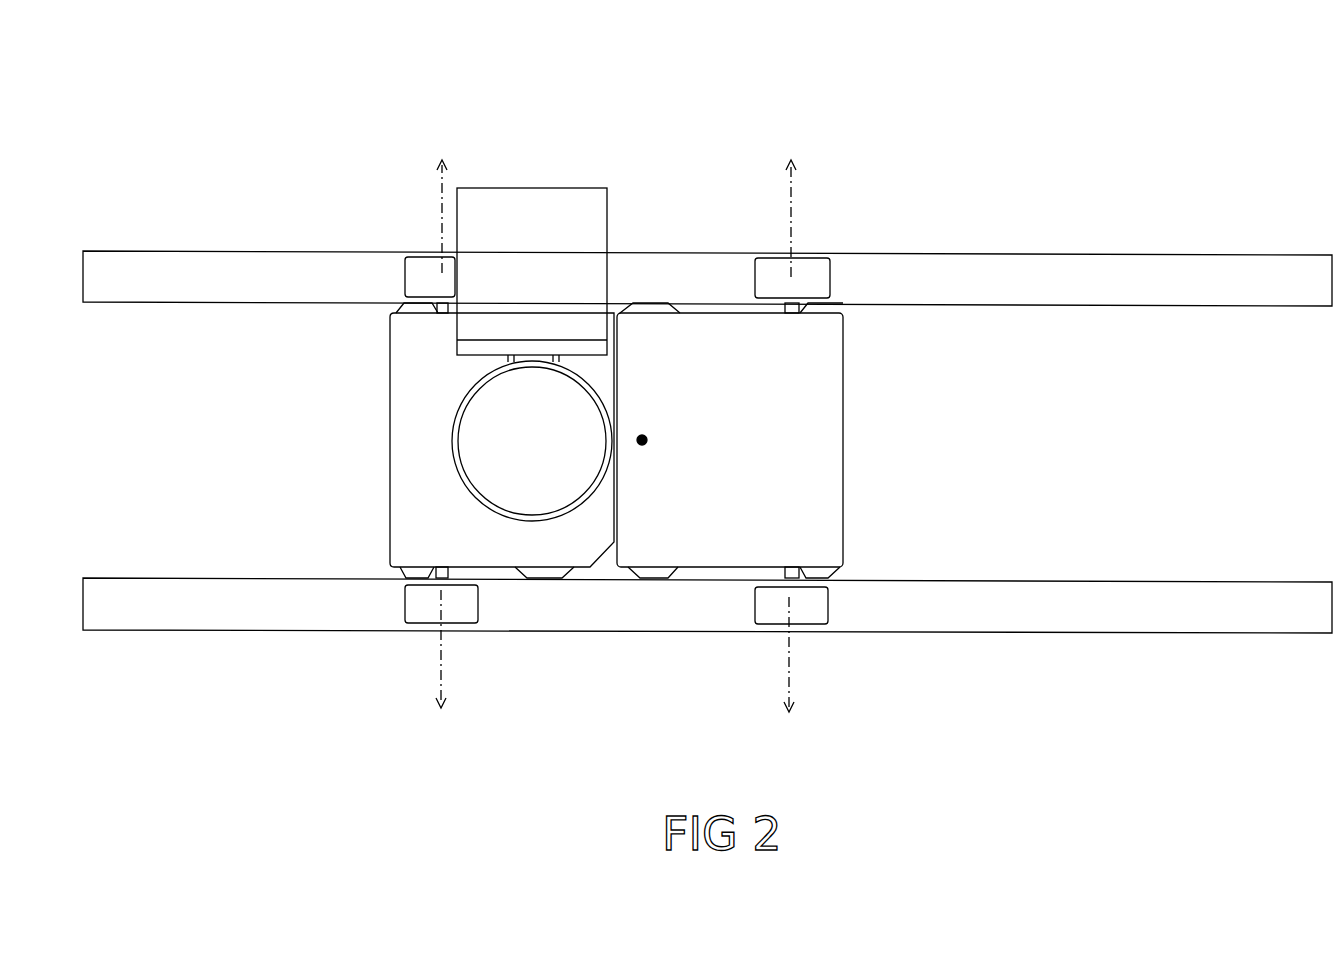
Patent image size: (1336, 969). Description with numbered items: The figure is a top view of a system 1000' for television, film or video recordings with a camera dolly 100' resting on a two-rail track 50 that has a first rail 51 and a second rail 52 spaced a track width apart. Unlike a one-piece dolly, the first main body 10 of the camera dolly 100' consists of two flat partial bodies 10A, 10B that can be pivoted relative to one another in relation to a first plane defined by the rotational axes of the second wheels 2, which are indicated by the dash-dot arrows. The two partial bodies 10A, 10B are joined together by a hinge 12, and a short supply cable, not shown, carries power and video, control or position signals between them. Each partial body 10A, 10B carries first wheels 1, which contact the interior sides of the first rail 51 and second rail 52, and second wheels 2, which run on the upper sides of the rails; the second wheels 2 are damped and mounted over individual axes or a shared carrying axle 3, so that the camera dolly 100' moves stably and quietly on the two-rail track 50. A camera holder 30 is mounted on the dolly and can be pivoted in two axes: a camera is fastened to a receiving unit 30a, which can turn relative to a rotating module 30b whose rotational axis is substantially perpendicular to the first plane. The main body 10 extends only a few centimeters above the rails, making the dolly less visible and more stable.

The first wheels 1 is at (410, 300).
The second wheels 2 is at (423, 268).
The carrying axle 3 is at (440, 310).
The first main body 10 is at (853, 494).
The flat partial body 10A is at (745, 532).
The flat partial body 10B is at (453, 507).
The hinge 12 is at (642, 433).
The camera holder 30 is at (617, 168).
The receiving unit 30a is at (507, 282).
The rotating module 30b is at (510, 454).
The two-rail track 50 is at (1102, 277).
The first rail 51 is at (707, 278).
The second rail 52 is at (707, 605).
The camera dolly 100' is at (707, 436).
The system 1000' is at (707, 371).